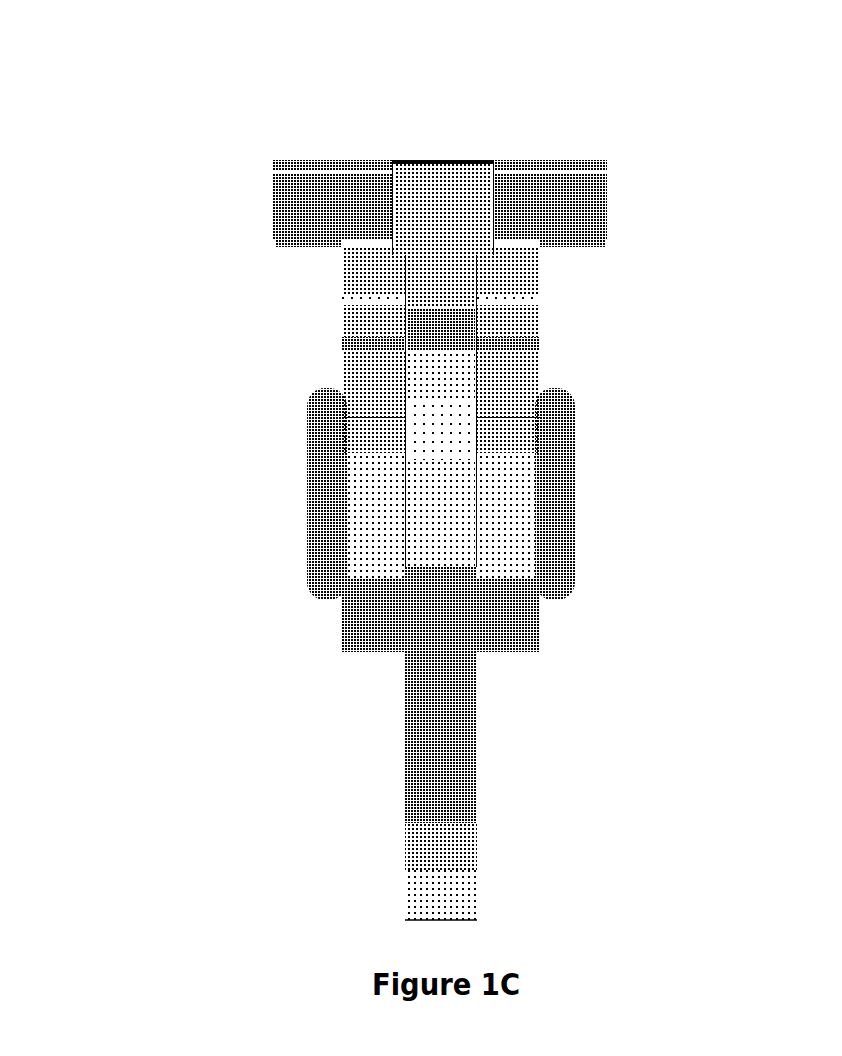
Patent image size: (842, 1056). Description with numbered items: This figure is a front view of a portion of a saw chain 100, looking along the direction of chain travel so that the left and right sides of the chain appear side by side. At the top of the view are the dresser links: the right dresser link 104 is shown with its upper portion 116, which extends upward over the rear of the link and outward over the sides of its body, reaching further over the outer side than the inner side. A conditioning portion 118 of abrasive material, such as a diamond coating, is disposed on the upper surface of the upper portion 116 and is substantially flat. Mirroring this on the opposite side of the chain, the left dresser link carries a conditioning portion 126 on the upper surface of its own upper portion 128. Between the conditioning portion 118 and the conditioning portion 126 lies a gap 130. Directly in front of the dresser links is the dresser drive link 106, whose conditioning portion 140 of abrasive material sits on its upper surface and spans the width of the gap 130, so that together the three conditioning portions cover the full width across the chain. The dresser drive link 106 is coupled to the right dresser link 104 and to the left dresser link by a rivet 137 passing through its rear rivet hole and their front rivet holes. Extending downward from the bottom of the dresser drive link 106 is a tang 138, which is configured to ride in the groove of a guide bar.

The saw chain 100 is at (160, 108).
The right dresser link 104 is at (444, 482).
The dresser drive link 106 is at (374, 412).
The upper portion 116 is at (263, 282).
The conditioning portion 118 is at (294, 147).
The conditioning portion 126 is at (579, 148).
The upper portion 128 is at (612, 265).
The gap 130 is at (473, 127).
The rivet 137 is at (362, 602).
The tang 138 is at (505, 743).
The conditioning portion 140 is at (522, 89).